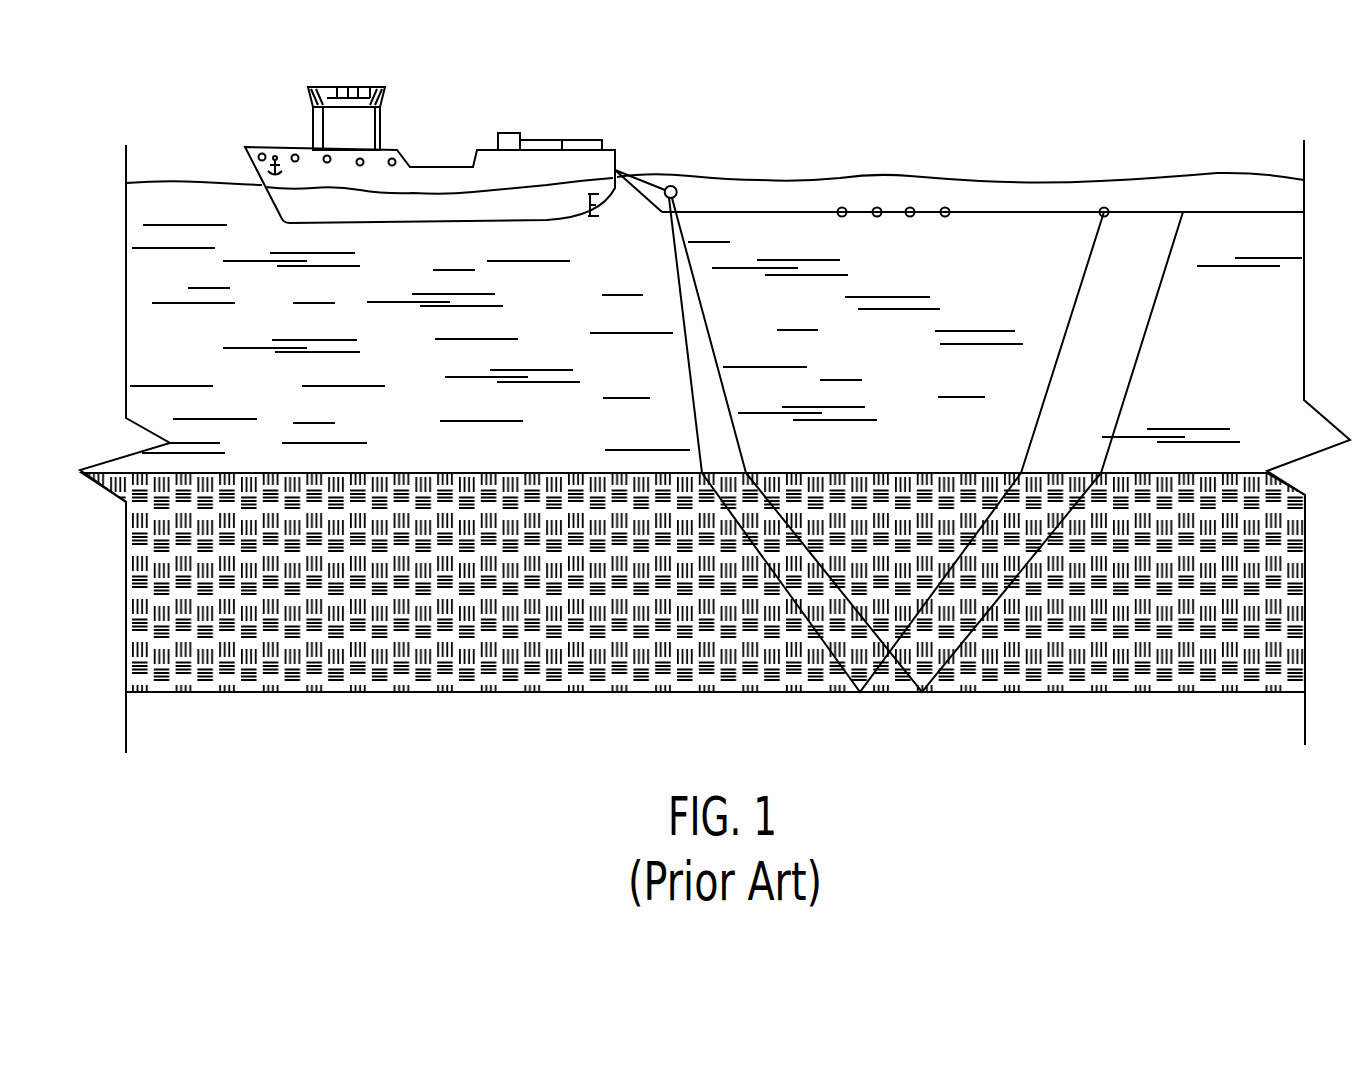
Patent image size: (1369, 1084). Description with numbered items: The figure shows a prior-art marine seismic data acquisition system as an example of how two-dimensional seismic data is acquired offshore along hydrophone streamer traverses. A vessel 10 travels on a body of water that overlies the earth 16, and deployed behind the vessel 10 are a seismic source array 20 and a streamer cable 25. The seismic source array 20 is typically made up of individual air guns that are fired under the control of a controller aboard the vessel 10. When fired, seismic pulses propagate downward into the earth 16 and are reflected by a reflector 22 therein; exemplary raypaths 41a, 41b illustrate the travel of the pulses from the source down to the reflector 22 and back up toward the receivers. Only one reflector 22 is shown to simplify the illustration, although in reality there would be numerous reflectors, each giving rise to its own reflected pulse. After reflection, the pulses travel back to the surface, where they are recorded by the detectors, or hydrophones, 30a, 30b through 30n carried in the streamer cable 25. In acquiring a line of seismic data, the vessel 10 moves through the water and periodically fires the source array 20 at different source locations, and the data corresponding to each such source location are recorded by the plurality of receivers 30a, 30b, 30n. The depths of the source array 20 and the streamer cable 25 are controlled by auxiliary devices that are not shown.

The vessel 10 is at (267, 148).
The earth 16 is at (1227, 359).
The seismic source array 20 is at (673, 187).
The reflector 22 is at (952, 692).
The streamer cable 25 is at (700, 212).
The detector (hydrophone) 30a is at (845, 208).
The detector (hydrophone) 30b is at (880, 209).
The detector (hydrophone) 30n is at (1106, 206).
The raypath 41a is at (692, 387).
The raypath 41b is at (708, 327).